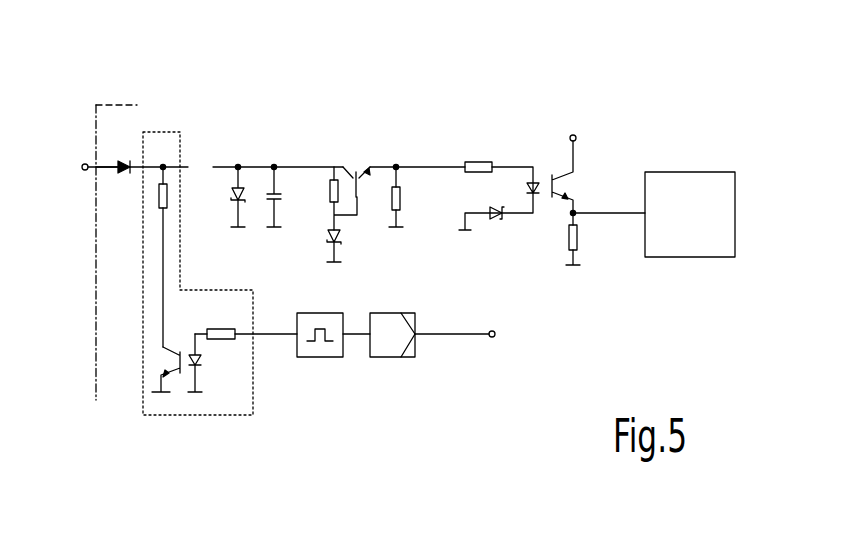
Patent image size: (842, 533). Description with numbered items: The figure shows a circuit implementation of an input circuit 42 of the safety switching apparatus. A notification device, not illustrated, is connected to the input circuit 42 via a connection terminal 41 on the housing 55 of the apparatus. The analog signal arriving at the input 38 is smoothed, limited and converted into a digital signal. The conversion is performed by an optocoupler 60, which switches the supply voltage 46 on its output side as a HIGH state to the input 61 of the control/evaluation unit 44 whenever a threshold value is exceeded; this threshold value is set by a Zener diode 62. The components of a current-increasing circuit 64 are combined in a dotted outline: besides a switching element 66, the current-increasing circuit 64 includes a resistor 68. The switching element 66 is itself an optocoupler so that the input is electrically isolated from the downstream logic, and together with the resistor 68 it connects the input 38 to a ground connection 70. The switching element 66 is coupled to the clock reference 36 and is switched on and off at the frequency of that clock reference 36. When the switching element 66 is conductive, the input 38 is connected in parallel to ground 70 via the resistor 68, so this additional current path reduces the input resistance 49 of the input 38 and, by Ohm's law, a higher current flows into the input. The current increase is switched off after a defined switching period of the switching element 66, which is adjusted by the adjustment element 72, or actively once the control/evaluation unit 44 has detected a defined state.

The clock reference 36 is at (312, 357).
The input 38 is at (129, 162).
The connection terminal 41 is at (83, 164).
The input circuit 42 is at (377, 131).
The control/evaluation unit 44 is at (692, 242).
The supply voltage 46 is at (575, 134).
The input resistance 49 is at (119, 198).
The housing 55 is at (115, 105).
The optocoupler 60 is at (558, 165).
The input of the control/evaluation unit 61 is at (644, 213).
The Zener diode 62 is at (497, 219).
The current-increasing circuit 64 is at (210, 416).
The switching element 66 is at (185, 326).
The resistor 68 is at (159, 201).
The ground connection 70 is at (161, 402).
The adjustment element 72 is at (392, 357).